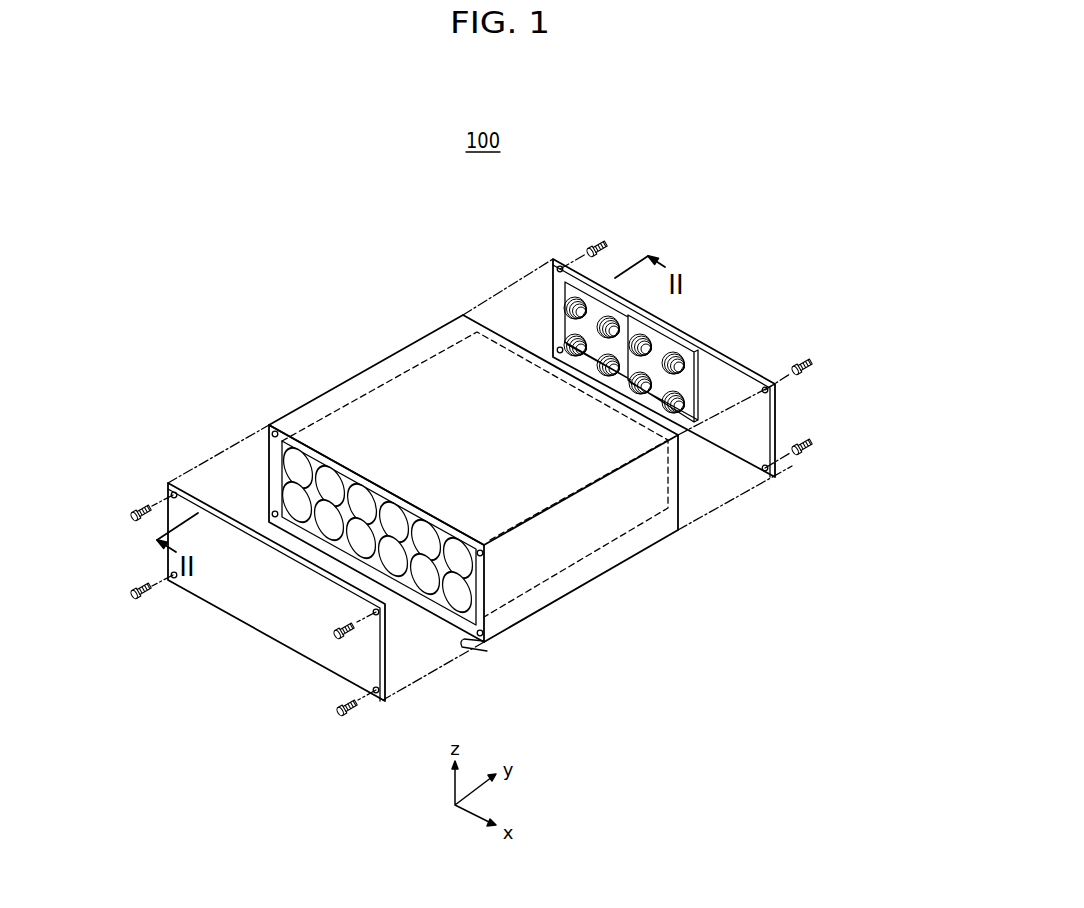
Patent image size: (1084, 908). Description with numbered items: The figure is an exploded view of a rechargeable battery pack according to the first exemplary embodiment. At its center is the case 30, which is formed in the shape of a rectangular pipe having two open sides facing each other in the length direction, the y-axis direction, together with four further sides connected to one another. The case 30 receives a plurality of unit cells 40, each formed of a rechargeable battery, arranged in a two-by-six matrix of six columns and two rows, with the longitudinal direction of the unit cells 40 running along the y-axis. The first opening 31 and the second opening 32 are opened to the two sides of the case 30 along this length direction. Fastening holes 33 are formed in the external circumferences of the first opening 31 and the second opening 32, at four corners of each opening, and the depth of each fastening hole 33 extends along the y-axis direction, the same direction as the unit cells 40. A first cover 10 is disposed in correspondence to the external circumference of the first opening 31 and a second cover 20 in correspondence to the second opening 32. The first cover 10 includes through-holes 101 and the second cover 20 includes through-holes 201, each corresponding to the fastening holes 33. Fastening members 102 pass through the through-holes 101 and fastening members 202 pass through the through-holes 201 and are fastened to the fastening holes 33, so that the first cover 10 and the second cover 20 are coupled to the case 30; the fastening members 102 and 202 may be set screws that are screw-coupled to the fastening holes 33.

The first cover 10 is at (262, 619).
The through-holes 101 is at (377, 693).
The fastening members 102 is at (334, 716).
The second cover 20 is at (714, 393).
The through-holes 201 is at (764, 470).
The fastening members 202 is at (812, 448).
The case 30 is at (442, 509).
The first opening 31 is at (283, 482).
The second opening 32 is at (652, 508).
The fastening holes 33 is at (465, 650).
The unit cells 40 is at (332, 484).